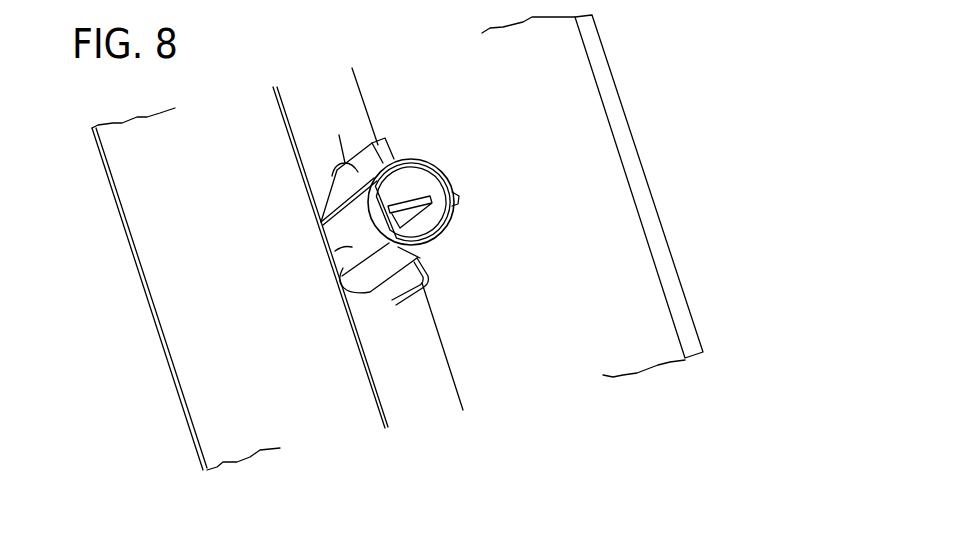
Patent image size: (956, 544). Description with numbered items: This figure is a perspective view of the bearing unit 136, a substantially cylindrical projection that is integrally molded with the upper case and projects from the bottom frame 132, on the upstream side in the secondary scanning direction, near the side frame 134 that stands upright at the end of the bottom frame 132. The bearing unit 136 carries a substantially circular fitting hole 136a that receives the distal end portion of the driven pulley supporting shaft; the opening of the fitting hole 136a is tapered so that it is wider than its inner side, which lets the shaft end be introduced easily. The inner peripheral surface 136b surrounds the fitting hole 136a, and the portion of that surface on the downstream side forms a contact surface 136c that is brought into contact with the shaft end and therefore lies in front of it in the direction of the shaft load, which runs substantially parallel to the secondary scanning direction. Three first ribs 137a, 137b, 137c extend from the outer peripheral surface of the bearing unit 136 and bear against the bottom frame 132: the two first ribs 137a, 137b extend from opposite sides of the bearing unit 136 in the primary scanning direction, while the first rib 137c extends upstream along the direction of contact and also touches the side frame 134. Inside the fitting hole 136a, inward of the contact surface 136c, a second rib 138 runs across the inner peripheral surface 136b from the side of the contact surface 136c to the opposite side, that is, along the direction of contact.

The bottom frame 132 is at (413, 402).
The side frame 134 is at (597, 212).
The bearing unit 136 is at (333, 252).
The fitting hole 136a is at (419, 178).
The inner peripheral surface 136b is at (427, 222).
The contact surface 136c is at (402, 185).
The first rib 137a is at (339, 135).
The first rib 137b is at (400, 306).
The first rib 137c is at (461, 198).
The second rib 138 is at (386, 221).